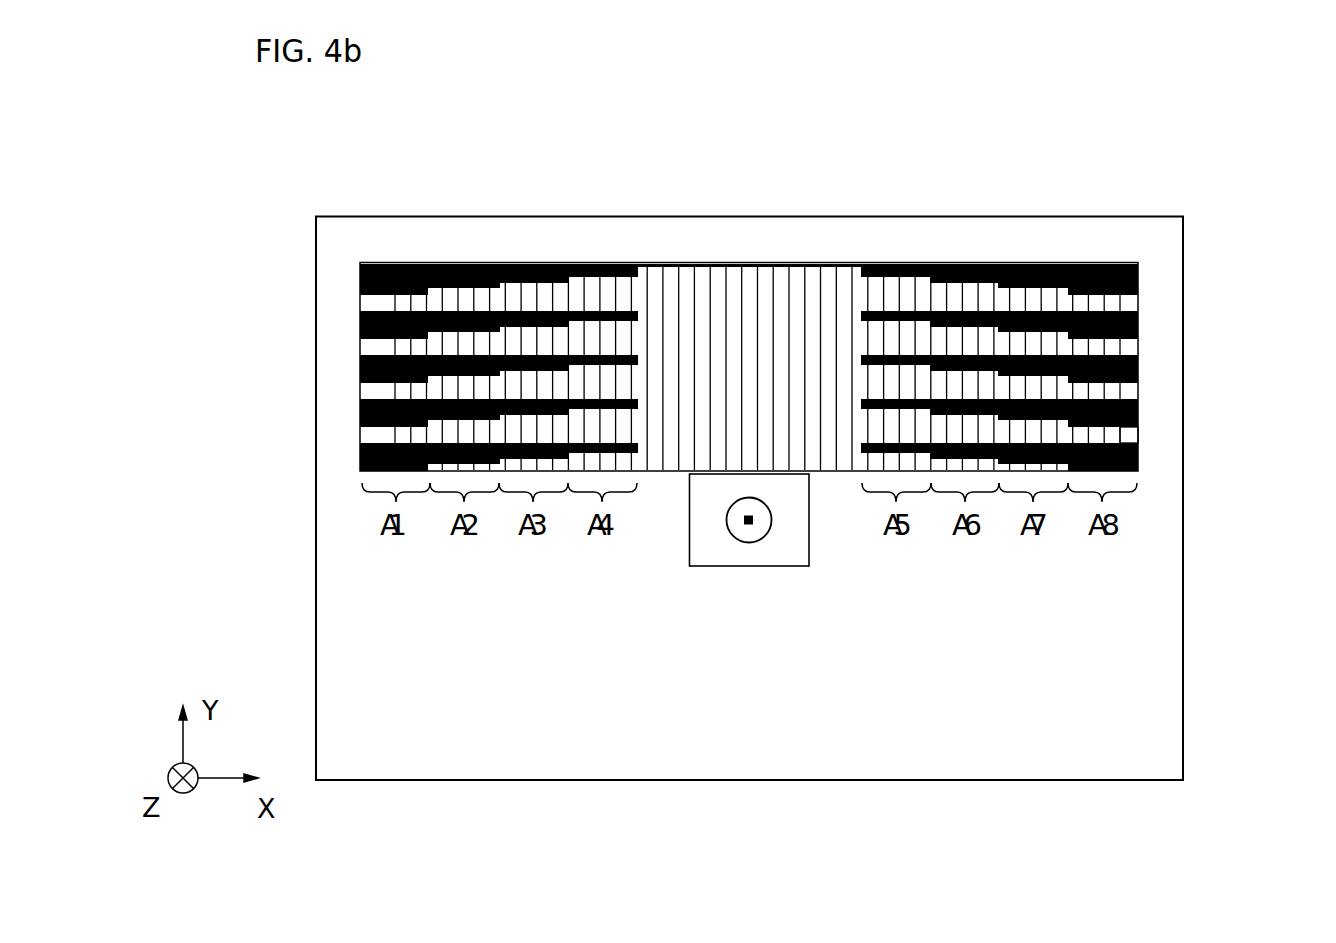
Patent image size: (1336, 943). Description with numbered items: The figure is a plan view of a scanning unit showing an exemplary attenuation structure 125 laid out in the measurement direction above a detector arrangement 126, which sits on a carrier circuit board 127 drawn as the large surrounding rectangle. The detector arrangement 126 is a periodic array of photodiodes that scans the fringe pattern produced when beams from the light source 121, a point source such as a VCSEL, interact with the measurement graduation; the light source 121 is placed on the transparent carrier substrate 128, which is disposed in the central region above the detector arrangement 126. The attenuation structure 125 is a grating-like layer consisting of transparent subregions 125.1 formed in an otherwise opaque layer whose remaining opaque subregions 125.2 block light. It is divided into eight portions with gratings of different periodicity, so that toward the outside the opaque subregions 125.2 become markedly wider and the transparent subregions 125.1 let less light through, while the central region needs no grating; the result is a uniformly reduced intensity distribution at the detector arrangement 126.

The light source 121 is at (748, 530).
The attenuation structure 125 is at (762, 309).
The transparent subregions 125.1 is at (1127, 437).
The opaque subregions 125.2 is at (1138, 378).
The detector arrangement 126 is at (757, 309).
The carrier circuit board 127 is at (432, 762).
The carrier substrate 128 is at (676, 285).